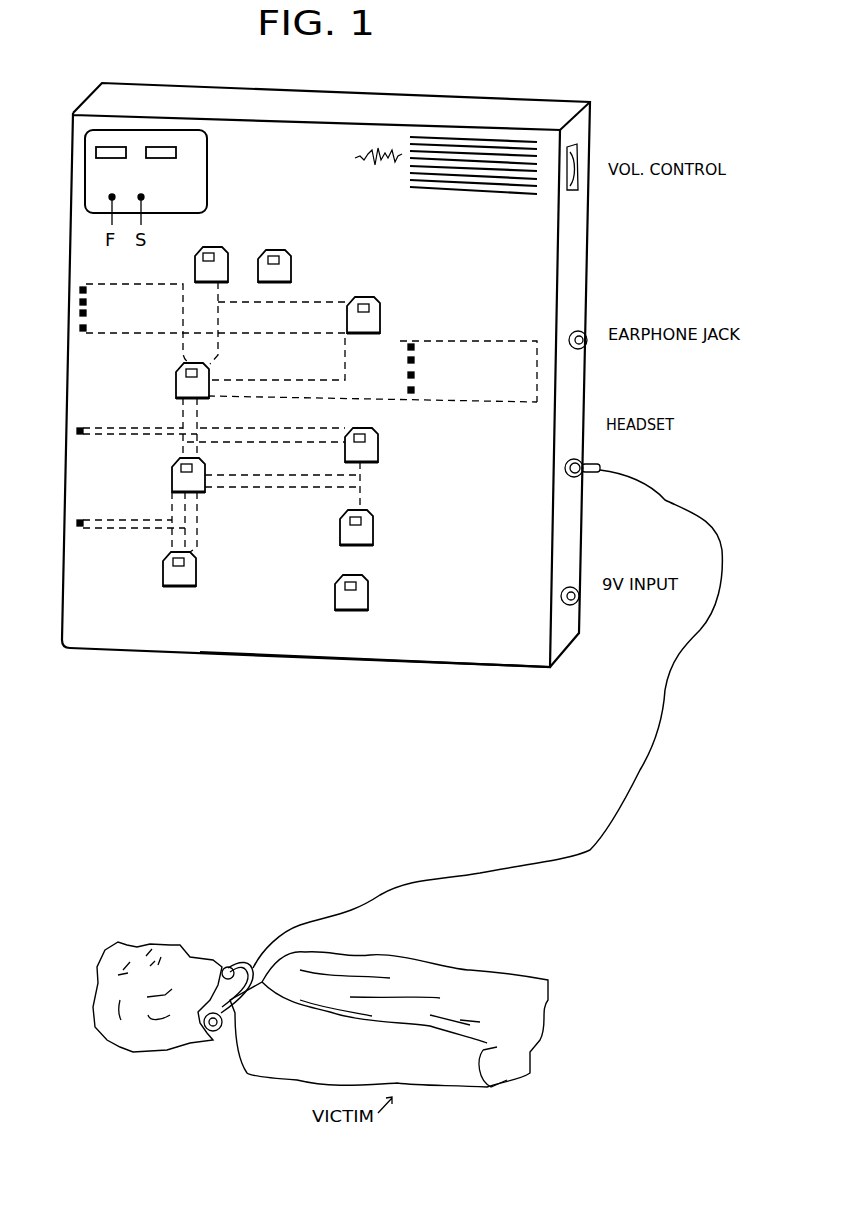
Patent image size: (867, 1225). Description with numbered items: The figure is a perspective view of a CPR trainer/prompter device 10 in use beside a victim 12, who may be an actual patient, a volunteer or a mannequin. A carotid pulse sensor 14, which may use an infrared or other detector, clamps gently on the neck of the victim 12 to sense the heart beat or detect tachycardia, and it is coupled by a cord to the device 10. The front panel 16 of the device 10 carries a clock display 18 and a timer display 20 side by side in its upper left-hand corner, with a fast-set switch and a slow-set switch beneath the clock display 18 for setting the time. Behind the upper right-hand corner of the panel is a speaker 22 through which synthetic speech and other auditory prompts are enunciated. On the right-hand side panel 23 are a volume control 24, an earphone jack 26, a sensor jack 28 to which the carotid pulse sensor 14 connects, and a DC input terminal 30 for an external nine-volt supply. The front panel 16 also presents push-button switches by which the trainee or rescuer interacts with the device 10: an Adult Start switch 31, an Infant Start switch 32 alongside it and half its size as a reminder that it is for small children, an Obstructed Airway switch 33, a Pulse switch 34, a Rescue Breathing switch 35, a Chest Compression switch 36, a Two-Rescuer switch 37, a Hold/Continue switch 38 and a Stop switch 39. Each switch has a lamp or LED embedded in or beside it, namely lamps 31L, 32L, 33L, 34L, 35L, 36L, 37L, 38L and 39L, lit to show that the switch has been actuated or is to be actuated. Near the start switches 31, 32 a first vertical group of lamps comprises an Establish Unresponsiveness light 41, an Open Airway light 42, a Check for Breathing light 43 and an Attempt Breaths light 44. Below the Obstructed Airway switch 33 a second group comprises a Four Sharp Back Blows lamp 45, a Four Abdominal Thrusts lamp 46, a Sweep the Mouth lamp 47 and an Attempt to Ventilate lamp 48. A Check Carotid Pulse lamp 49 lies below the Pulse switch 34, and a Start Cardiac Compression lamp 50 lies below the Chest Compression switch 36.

The CPR trainer/prompter device 10 is at (241, 161).
The victim 12 is at (387, 968).
The carotid pulse sensor 14 is at (242, 966).
The front panel 16 is at (540, 295).
The clock display 18 is at (116, 147).
The timer display 20 is at (155, 147).
The speaker 22 is at (470, 175).
The right-hand side panel 23 is at (528, 668).
The volume control 24 is at (580, 187).
The earphone jack 26 is at (588, 347).
The sensor jack 28 is at (586, 462).
The DC input terminal 30 is at (580, 600).
The Adult Start switch 31 is at (194, 248).
The lamp of Adult Start switch 31L is at (208, 250).
The Infant Start switch 32 is at (300, 263).
The lamp of Infant Start switch 32L is at (278, 261).
The Obstructed Airway switch 33 is at (384, 299).
The lamp of Obstructed Airway switch 33L is at (365, 305).
The Pulse switch 34 is at (188, 378).
The lamp of Pulse switch 34L is at (198, 373).
The Rescue Breathing switch 35 is at (379, 464).
The lamp of Rescue Breathing switch 35L is at (384, 450).
The Chest Compression switch 36 is at (186, 474).
The lamp of Chest Compression switch 36L is at (194, 468).
The Two-Rescuer switch 37 is at (357, 538).
The lamp of Two-Rescuer switch 37L is at (362, 521).
The Hold/Continue switch 38 is at (357, 610).
The lamp of Hold/Continue switch 38L is at (358, 584).
The Stop switch 39 is at (205, 584).
The lamp of Stop switch 39L is at (190, 562).
The Establish Unresponsiveness light 41 is at (80, 290).
The Open Airway light 42 is at (80, 302).
The Check for Breathing light 43 is at (80, 313).
The Attempt Breaths light 44 is at (80, 329).
The Four Sharp Back Blows lamp 45 is at (414, 347).
The Four Abdominal Thrusts lamp 46 is at (414, 360).
The Sweep the Mouth lamp 47 is at (414, 375).
The Attempt to Ventilate lamp 48 is at (414, 390).
The Check Carotid Pulse lamp 49 is at (78, 430).
The Start Cardiac Compression lamp 50 is at (78, 522).